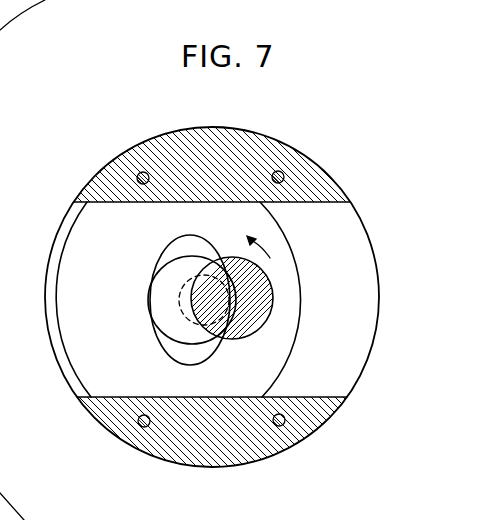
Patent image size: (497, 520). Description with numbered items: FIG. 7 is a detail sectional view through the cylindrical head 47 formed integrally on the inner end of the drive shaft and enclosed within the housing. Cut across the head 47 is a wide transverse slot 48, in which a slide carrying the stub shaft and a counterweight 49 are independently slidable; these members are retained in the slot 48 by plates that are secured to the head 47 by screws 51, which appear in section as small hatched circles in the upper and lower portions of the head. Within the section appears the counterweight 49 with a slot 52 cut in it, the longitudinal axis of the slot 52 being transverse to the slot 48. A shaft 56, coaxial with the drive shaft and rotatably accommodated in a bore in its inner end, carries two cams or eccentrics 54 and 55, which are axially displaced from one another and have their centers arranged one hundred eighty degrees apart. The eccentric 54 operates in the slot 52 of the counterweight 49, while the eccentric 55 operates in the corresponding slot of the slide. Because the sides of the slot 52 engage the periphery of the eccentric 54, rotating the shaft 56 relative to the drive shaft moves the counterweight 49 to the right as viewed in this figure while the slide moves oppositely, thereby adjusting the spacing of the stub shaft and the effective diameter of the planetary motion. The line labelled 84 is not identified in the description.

The cylindrical head 47 is at (363, 224).
The transverse slot 48 is at (320, 397).
The counterweight 49 is at (67, 303).
The screws 51 is at (285, 175).
The slot 52 is at (151, 268).
The eccentric 54 is at (172, 322).
The eccentric 55 is at (270, 319).
The shaft 56 is at (207, 313).
The lever 84 is at (13, 487).